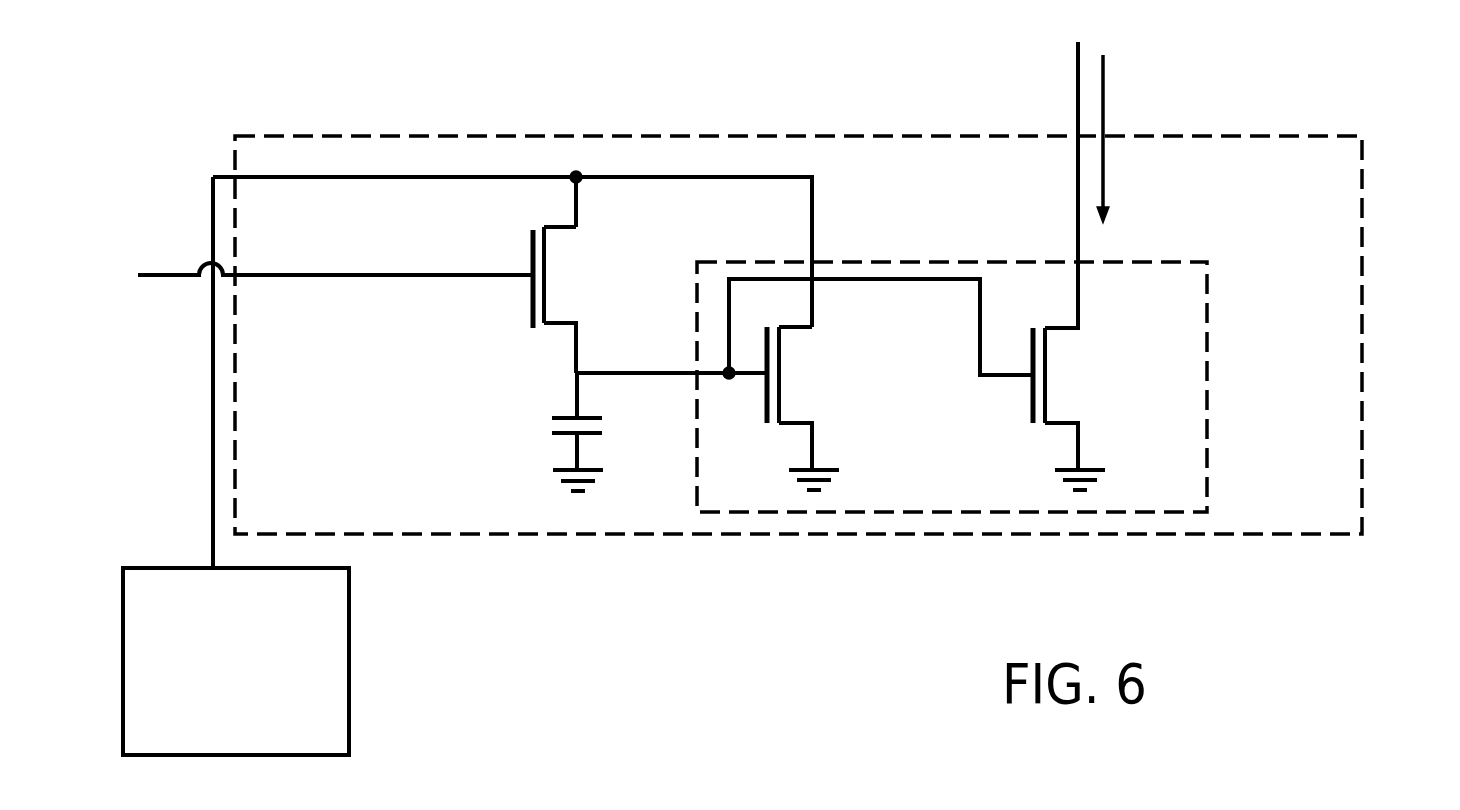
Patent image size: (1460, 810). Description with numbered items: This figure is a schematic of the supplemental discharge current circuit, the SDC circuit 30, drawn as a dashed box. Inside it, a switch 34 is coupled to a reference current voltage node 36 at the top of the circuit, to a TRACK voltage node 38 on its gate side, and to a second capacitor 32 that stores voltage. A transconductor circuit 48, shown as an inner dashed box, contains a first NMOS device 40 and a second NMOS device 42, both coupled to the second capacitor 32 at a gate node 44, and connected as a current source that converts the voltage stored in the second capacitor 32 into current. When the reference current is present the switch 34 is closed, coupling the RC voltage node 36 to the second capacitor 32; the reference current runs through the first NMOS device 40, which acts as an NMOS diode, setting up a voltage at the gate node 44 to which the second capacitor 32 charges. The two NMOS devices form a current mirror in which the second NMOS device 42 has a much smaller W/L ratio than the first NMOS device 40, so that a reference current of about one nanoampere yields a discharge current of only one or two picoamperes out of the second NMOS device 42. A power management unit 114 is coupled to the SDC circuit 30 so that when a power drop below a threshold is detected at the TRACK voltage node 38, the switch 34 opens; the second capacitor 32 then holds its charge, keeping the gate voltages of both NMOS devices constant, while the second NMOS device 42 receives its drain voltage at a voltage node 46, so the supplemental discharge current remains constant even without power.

The SDC circuit 30 is at (1385, 316).
The second capacitor 32 is at (549, 397).
The switch 34 is at (599, 275).
The reference current voltage node 36 is at (512, 231).
The TRACK voltage node 38 is at (335, 256).
The first NMOS device 40 is at (838, 408).
The second NMOS device 42 is at (1103, 401).
The gate node 44 is at (734, 396).
The voltage node 46 is at (1098, 312).
The transconductor circuit 48 is at (1227, 406).
The power management unit 114 is at (261, 746).